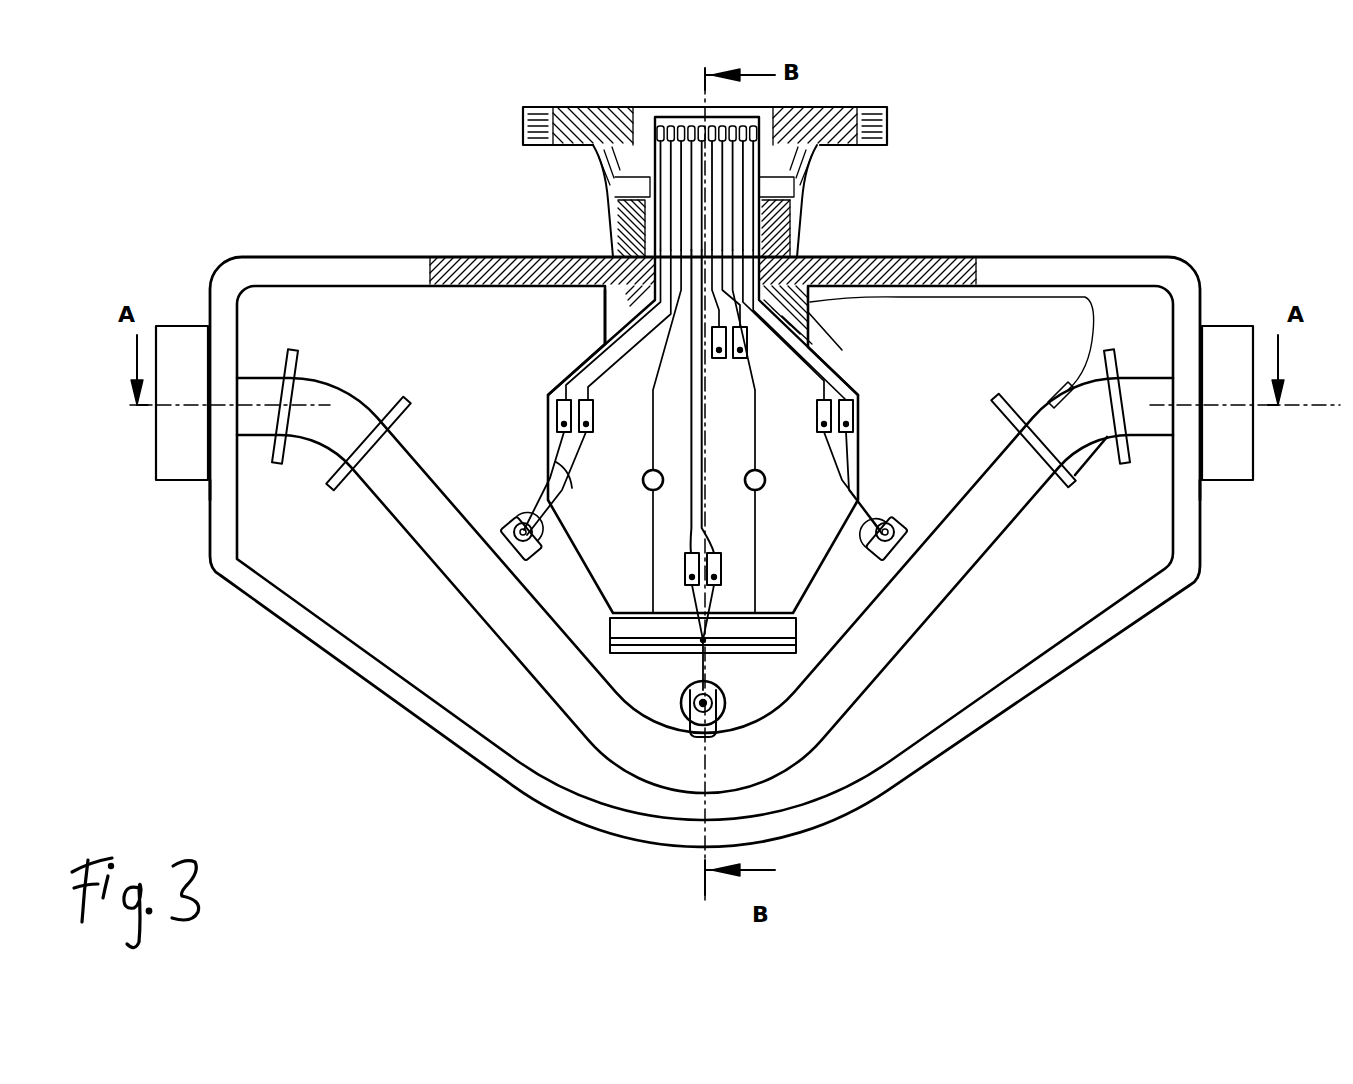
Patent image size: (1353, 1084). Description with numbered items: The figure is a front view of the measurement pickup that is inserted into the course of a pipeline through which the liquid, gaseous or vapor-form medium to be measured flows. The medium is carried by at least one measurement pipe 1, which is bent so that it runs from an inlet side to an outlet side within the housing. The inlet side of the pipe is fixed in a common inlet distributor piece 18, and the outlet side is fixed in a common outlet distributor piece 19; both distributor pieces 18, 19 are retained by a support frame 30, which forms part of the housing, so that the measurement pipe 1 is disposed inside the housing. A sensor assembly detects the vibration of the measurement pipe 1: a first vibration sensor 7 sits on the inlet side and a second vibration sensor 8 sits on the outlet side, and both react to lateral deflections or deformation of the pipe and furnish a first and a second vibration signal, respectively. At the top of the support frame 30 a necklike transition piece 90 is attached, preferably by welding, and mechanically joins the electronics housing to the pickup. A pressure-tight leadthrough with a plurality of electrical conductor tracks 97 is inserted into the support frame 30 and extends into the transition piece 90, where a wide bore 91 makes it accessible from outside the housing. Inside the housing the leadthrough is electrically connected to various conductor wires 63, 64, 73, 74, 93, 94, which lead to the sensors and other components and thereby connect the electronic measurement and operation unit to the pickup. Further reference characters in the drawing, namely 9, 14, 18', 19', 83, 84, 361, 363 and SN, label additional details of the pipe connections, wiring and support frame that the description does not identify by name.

The measurement pipe 1 is at (396, 530).
The first vibration sensor 7 is at (500, 560).
The second vibration sensor 8 is at (915, 558).
The temperature sensor 9 is at (1058, 392).
The tube outlet section 14 is at (1098, 455).
The inlet distributor piece 18 is at (182, 339).
The inlet connector seat 18' is at (189, 528).
The outlet distributor piece 19 is at (1232, 348).
The outlet connector seat 19' is at (1233, 537).
The support frame 30 is at (1115, 270).
The conductor wire 63 is at (690, 592).
The conductor wire 64 is at (720, 592).
The conductor wire 73 is at (549, 472).
The conductor wire 74 is at (590, 500).
The first lead of transducer 8 83 is at (822, 442).
The second lead of transducer 8 84 is at (858, 442).
The transition piece 90 is at (812, 165).
The bore 91 is at (642, 135).
The conductor wire 93 is at (752, 336).
The conductor wire 94 is at (811, 345).
The electrical conductor tracks 97 is at (838, 380).
The housing wall seal 361 is at (606, 322).
The connector sealing ring 363 is at (614, 240).
The sensor node connection SN is at (766, 538).